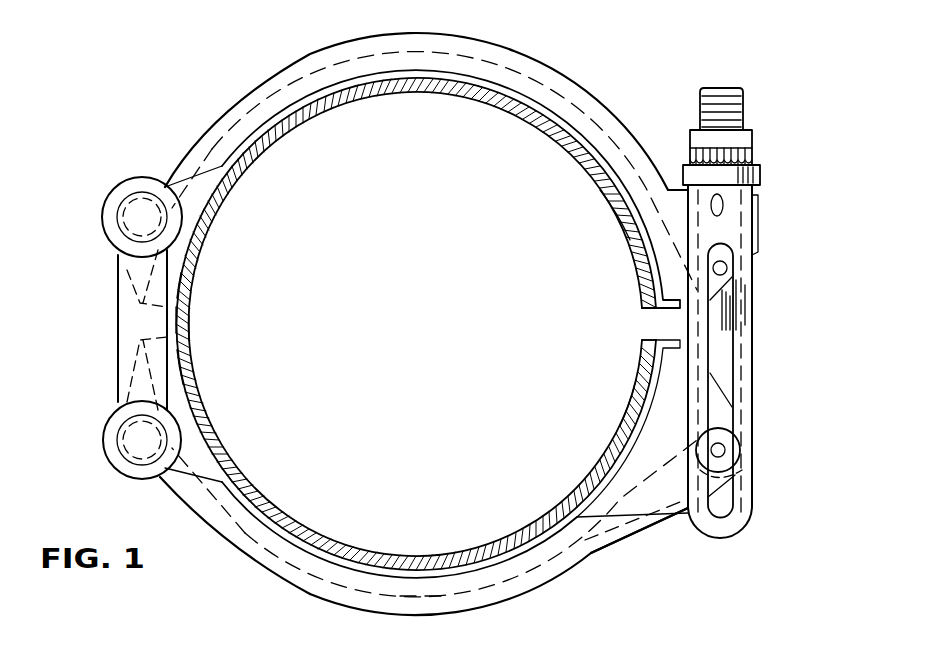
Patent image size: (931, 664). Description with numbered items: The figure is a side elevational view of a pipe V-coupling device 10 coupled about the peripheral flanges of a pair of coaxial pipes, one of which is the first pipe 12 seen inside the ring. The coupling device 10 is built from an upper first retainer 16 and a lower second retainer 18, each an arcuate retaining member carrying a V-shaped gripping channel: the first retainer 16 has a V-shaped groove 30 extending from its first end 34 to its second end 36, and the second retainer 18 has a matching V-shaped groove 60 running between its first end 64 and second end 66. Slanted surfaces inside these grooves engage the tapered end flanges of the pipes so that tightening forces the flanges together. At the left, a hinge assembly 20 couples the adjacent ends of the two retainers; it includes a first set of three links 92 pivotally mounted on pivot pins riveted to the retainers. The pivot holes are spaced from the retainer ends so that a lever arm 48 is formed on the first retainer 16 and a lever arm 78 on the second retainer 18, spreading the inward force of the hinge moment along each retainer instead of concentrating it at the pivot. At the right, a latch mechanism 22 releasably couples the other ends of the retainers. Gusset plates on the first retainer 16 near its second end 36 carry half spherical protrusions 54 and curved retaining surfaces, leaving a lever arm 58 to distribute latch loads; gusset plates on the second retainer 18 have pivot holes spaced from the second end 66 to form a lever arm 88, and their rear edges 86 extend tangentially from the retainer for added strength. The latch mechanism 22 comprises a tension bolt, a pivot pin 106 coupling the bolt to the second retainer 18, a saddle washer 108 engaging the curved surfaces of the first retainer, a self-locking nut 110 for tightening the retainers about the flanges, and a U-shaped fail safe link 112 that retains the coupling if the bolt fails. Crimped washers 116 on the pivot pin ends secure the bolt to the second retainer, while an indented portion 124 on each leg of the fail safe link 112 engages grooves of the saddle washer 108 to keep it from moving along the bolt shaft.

The pipe V-coupling device 10 is at (186, 108).
The first pipe 12 is at (414, 92).
The first retainer 16 is at (598, 80).
The second retainer 18 is at (568, 590).
The hinge assembly 20 is at (113, 168).
The latch mechanism 22 is at (769, 313).
The V-shaped groove 30 is at (460, 52).
The first end of first retainer 34 is at (182, 316).
The second end of first retainer 36 is at (650, 312).
The lever arm 48 is at (188, 266).
The half spherical protrusion 54 is at (730, 268).
The lever arm 58 is at (605, 222).
The V-shaped groove 60 is at (425, 590).
The first end of second retainer 64 is at (172, 335).
The second end of second retainer 66 is at (650, 332).
The lever arm 78 is at (182, 390).
The rear edges of gusset plates 86 is at (672, 520).
The lever arm 88 is at (660, 395).
The links 92 is at (118, 330).
The pivot pin 106 is at (728, 450).
The saddle washer 108 is at (762, 196).
The self-locking nut 110 is at (745, 135).
The fail safe link 112 is at (760, 399).
The washers 116 is at (735, 472).
The indented portion 124 is at (727, 206).